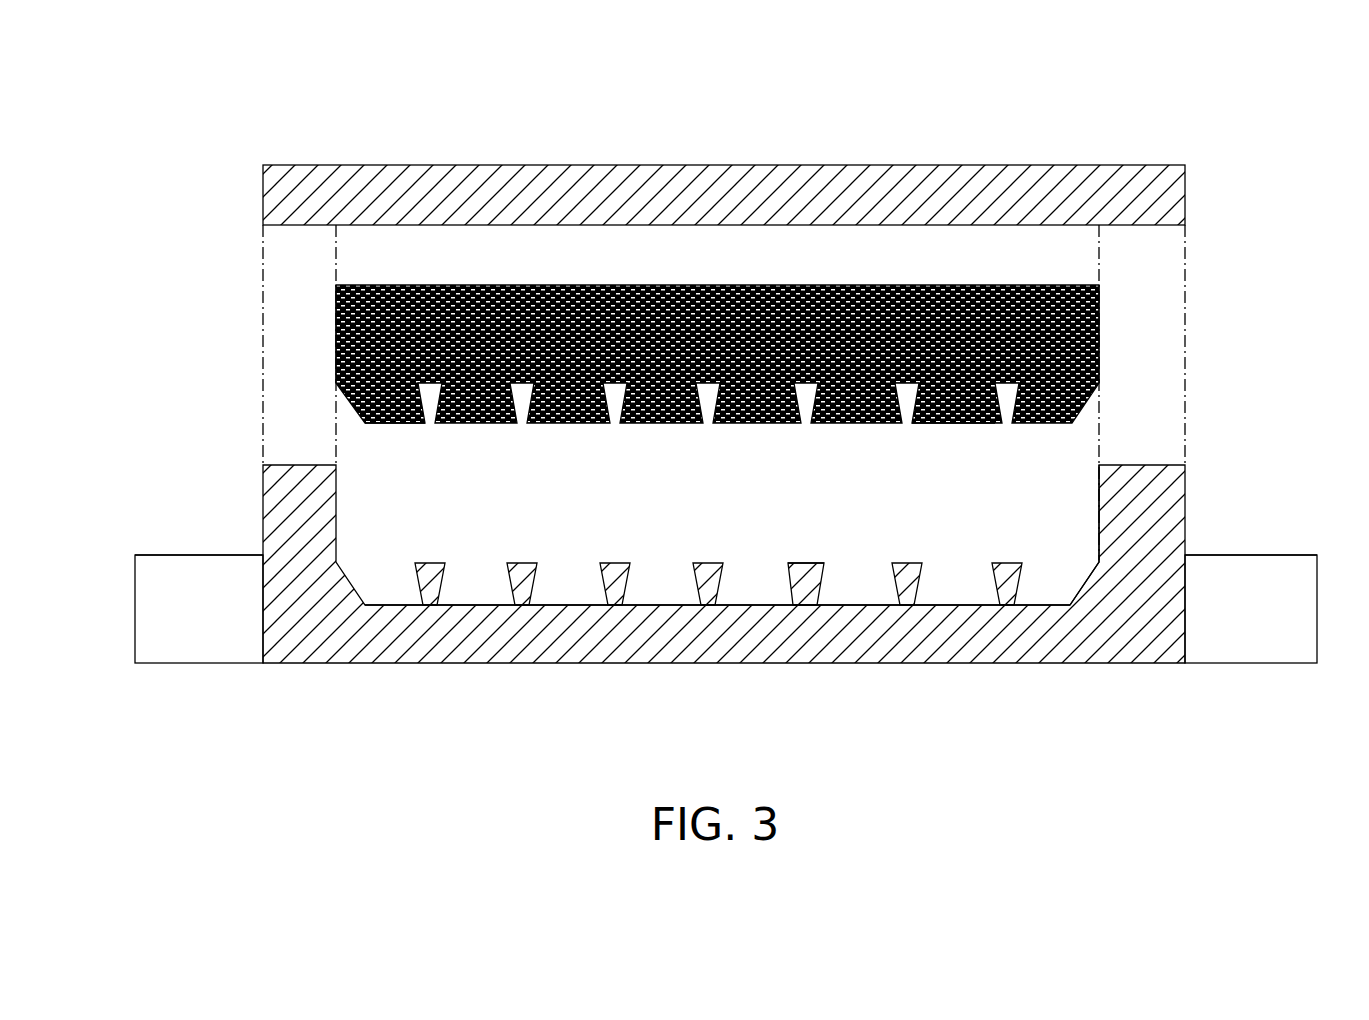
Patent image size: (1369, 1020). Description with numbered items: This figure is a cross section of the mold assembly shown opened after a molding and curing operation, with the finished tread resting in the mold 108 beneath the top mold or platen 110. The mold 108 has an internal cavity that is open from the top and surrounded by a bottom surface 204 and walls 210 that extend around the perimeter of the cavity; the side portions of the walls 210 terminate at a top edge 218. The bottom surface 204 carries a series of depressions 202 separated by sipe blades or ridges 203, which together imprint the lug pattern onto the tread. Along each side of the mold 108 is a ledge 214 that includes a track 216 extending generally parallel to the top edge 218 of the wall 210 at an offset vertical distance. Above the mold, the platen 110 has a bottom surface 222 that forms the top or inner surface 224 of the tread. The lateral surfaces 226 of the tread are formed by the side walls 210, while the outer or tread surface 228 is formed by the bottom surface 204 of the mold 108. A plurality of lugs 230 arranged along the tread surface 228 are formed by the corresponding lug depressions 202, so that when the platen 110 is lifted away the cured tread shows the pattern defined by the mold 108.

The mold 108 is at (277, 490).
The top mold or platen 110 is at (1082, 183).
The depressions 202 is at (653, 577).
The sipe blades or ridges 203 is at (428, 573).
The bottom surface 204 is at (805, 563).
The walls 210 is at (1152, 512).
The tracks or ledges 214 is at (165, 618).
The track 216 is at (185, 555).
The top edge 218 is at (1185, 465).
The bottom surface 222 is at (1131, 225).
The top or inner surface 224 is at (407, 285).
The lateral surfaces 226 is at (338, 315).
The outer or tread surface 228 is at (967, 423).
The lugs 230 is at (445, 425).